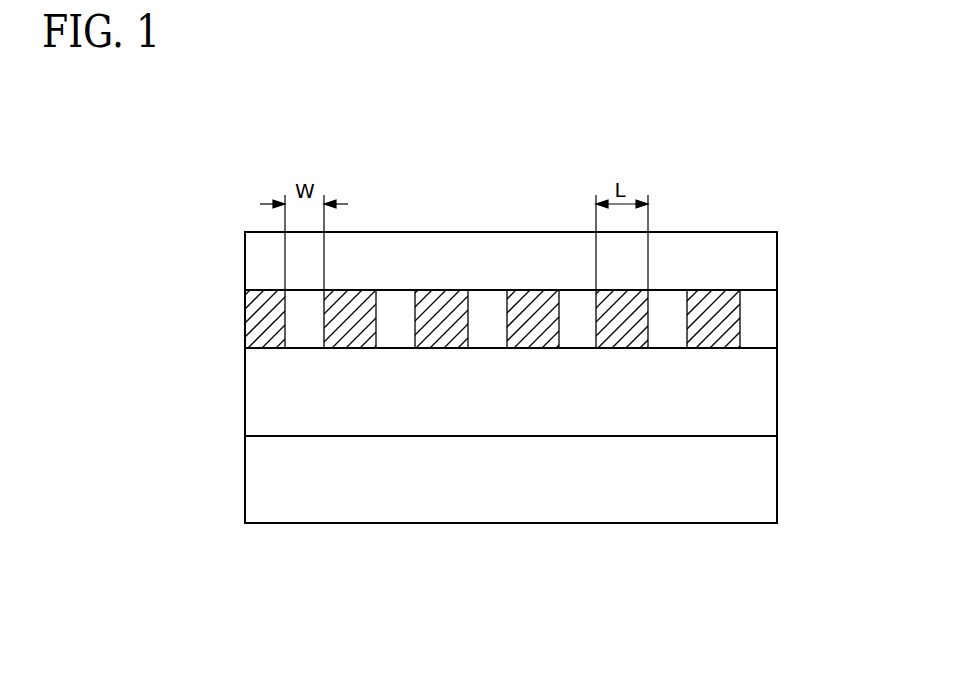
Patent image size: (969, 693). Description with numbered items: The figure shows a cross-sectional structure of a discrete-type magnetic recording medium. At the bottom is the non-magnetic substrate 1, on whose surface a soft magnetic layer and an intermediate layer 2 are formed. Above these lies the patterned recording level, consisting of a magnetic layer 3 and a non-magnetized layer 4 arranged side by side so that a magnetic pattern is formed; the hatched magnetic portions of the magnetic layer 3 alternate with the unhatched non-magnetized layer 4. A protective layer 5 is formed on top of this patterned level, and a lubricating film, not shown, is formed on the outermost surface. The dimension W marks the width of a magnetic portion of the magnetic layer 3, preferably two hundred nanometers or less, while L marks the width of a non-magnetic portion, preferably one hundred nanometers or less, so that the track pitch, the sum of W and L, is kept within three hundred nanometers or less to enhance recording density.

The non-magnetic substrate 1 is at (757, 476).
The soft magnetic layer and intermediate layer 2 is at (757, 389).
The magnetic layer 3 is at (757, 318).
The non-magnetized layer 4 is at (712, 297).
The protective layer 5 is at (757, 260).